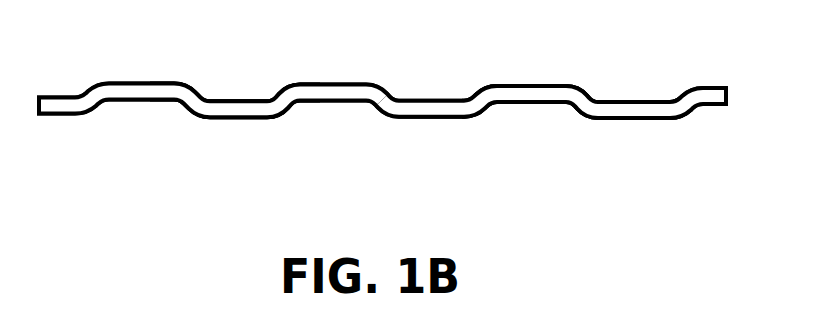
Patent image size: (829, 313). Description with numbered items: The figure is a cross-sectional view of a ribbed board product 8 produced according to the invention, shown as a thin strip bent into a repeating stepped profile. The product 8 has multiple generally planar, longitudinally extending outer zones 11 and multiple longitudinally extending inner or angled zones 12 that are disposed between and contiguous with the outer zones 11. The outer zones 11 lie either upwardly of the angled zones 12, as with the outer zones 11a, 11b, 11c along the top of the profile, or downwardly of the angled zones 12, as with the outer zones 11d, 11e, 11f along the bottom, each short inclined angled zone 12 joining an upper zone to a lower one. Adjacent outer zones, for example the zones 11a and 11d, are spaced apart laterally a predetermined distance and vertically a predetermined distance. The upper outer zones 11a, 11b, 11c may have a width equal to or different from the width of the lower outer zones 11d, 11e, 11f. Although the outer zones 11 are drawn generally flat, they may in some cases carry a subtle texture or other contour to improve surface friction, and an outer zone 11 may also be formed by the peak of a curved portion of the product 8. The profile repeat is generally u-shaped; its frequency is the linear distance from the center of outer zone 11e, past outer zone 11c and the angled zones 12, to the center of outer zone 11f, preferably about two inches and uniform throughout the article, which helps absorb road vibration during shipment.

The product 8 is at (604, 184).
The outer zones 11 is at (303, 82).
The outer zone 11a is at (122, 81).
The outer zone 11b is at (337, 82).
The outer zone 11c is at (532, 83).
The outer zone 11d is at (230, 119).
The outer zone 11e is at (408, 119).
The outer zone 11f is at (624, 121).
The angled zones 12 is at (675, 101).